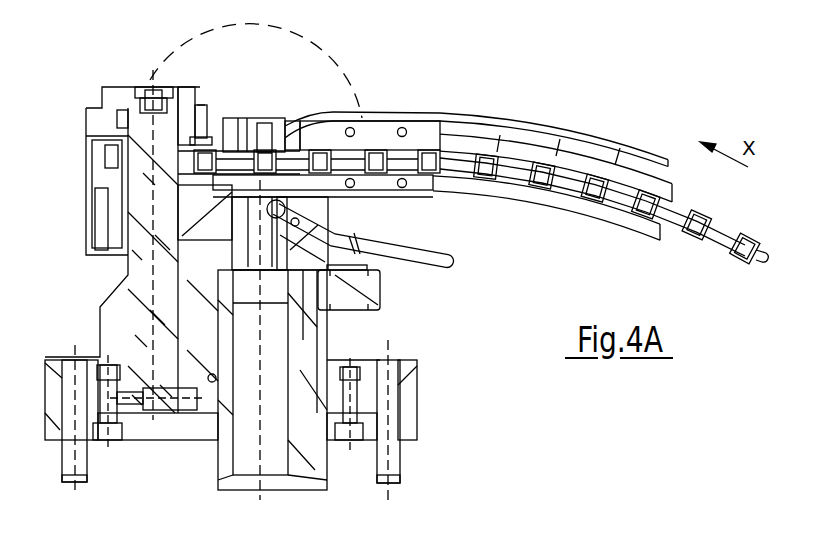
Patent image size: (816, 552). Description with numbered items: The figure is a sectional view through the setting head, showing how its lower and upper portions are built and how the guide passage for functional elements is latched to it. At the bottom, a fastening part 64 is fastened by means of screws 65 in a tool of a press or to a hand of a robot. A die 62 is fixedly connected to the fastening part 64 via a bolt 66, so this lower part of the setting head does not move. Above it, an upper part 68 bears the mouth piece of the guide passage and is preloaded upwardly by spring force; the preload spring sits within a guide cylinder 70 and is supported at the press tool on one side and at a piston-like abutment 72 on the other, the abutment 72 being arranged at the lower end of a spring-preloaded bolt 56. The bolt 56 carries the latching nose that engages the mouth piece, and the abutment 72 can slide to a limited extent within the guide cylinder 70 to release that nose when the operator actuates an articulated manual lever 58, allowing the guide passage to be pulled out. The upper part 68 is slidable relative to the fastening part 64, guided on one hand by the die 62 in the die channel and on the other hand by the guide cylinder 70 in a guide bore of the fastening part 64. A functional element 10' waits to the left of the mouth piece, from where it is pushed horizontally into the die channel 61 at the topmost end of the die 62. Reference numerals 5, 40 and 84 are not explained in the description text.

The housing 5 is at (92, 205).
The functional element 10' is at (226, 106).
The chain guide assembly 40 is at (405, 78).
The bolt 56 is at (380, 290).
The articulated manual lever 58 is at (437, 255).
The die channel 61 is at (125, 223).
The die 62 is at (148, 265).
The fastening part 64 is at (80, 462).
The screws 65 is at (393, 465).
The bolt 66 is at (162, 397).
The upper part 68 is at (322, 207).
The guide cylinder 70 is at (302, 465).
The piston-like abutment 72 is at (250, 288).
The guide rail 84 is at (543, 125).